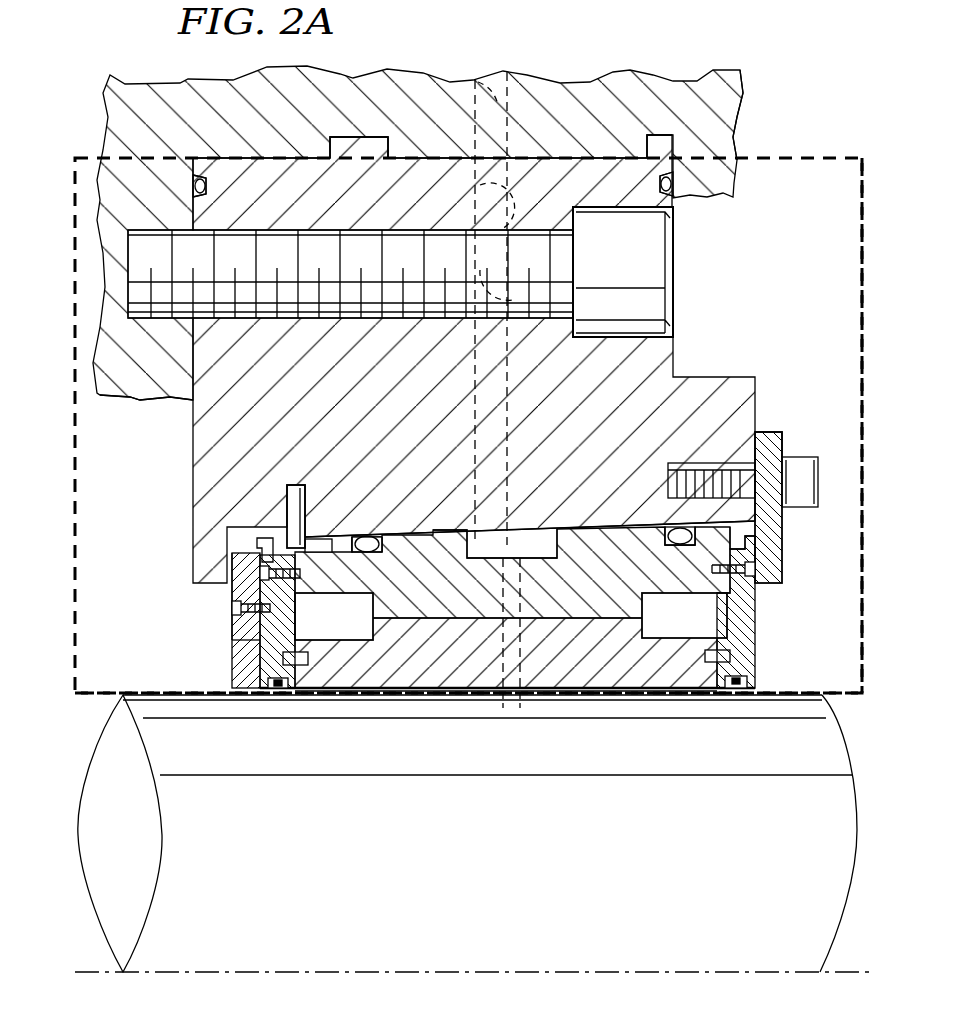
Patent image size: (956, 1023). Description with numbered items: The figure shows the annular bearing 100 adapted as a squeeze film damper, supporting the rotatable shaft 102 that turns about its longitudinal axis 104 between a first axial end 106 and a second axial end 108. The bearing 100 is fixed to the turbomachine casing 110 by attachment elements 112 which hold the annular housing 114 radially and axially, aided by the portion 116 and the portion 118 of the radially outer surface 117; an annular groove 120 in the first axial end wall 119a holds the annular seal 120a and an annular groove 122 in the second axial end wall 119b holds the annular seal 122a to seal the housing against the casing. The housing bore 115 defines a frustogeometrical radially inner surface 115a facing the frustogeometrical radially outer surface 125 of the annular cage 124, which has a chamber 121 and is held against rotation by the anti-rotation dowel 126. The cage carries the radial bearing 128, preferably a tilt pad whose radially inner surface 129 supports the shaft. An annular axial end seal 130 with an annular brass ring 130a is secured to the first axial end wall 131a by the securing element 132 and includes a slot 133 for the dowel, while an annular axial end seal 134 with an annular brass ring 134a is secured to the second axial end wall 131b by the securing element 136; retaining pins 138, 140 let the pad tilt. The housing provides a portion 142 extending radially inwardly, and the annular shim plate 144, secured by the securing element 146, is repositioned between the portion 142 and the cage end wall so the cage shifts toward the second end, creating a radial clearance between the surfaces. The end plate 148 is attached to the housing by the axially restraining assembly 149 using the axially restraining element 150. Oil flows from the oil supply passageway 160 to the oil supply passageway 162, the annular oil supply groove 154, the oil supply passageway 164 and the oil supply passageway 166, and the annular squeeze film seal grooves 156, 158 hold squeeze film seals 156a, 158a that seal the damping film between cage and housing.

The annular bearing 100 is at (74, 700).
The rotatable shaft 102 is at (518, 849).
The longitudinal axis 104 is at (206, 973).
The first axial end 106 is at (75, 180).
The second axial end 108 is at (862, 168).
The casing 110 is at (170, 131).
The attachment elements 112 is at (650, 308).
The annular housing 114 is at (366, 404).
The bore 115 is at (748, 528).
The frustogeometrical radially inner surface 115a is at (470, 530).
The portion 116 is at (364, 152).
The radially outer surface 117 is at (356, 150).
The portion 118 is at (658, 140).
The first axial end wall 119a is at (188, 402).
The second axial end wall 119b is at (734, 118).
The annular groove 120 is at (208, 187).
The annular seal 120a is at (196, 186).
The chamber 121 is at (640, 700).
The annular groove 122 is at (660, 184).
The annular seal 122a is at (670, 192).
The annular cage 124 is at (477, 606).
The frustogeometrical radially outer surface 125 is at (360, 552).
The anti-rotation dowel 126 is at (290, 505).
The radial bearing 128 is at (472, 669).
The radially inner surface 129 is at (560, 692).
The annular axial end seal 130 is at (242, 660).
The annular brass ring 130a is at (278, 692).
The first axial end wall 131a is at (300, 622).
The second axial end wall 131b is at (716, 608).
The securing element 132 is at (236, 550).
The slot 133 is at (258, 545).
The annular axial end seal 134 is at (742, 630).
The annular brass ring 134a is at (740, 692).
The securing element 136 is at (752, 570).
The retaining pin 138 is at (302, 660).
The retaining pin 140 is at (705, 656).
The portion 142 is at (236, 576).
The annular shim plate 144 is at (242, 640).
The securing element 146 is at (238, 608).
The end plate 148 is at (776, 562).
The axially restraining assembly 149 is at (788, 426).
The axially restraining element 150 is at (795, 463).
The annular oil supply groove 154 is at (467, 554).
The annular squeeze film seal groove 156 is at (370, 536).
The squeeze film seal 156a is at (358, 540).
The annular squeeze film seal groove 158 is at (668, 540).
The squeeze film seal 158a is at (676, 532).
The oil supply passageway 160 is at (490, 74).
The oil supply passageway 162 is at (498, 240).
The oil supply passageway 164 is at (532, 604).
The oil supply passageway 166 is at (510, 702).